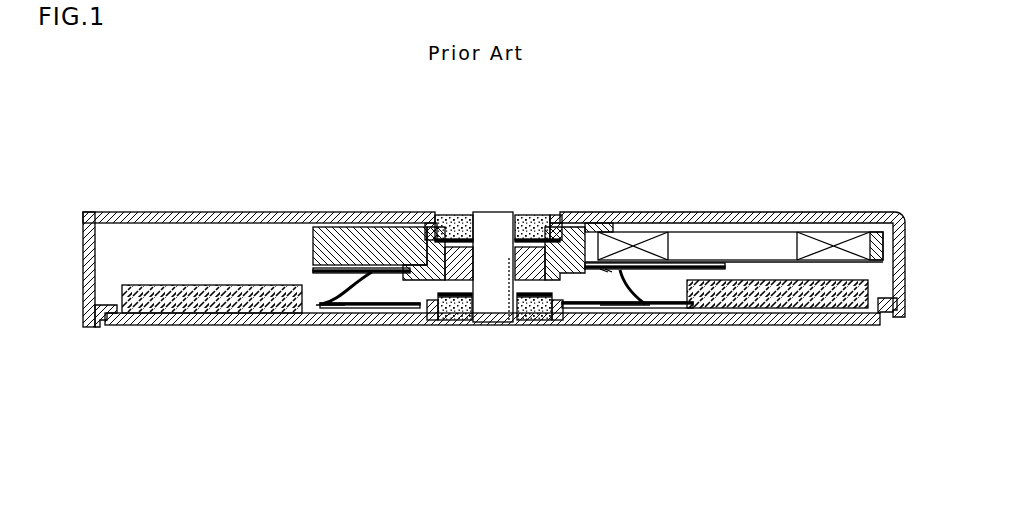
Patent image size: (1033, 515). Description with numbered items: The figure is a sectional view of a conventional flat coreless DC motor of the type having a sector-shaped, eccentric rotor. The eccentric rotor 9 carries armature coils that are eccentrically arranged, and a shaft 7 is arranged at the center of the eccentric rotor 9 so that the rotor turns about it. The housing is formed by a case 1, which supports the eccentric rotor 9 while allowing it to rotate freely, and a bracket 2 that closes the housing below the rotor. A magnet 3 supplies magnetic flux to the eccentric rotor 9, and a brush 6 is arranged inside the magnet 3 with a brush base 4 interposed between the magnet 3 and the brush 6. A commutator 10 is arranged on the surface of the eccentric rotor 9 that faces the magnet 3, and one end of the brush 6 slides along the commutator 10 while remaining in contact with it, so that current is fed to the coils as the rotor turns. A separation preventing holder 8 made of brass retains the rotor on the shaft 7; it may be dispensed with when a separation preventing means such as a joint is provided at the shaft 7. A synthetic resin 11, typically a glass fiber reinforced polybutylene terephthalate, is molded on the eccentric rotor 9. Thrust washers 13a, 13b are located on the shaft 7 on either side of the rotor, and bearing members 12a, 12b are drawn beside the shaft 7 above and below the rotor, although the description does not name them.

The case 1 is at (229, 213).
The bracket 2 is at (211, 325).
The magnet 3 is at (783, 300).
The brush base 4 is at (640, 322).
The brush 6 is at (380, 325).
The shaft 7 is at (496, 215).
The separation preventing holder 8 is at (445, 212).
The eccentric rotor 9 is at (636, 238).
The commutator 10 is at (655, 268).
The synthetic resin 11 is at (340, 230).
The upper bearing 12a is at (535, 215).
The lower bearing 12b is at (450, 322).
The thrust washer 13a is at (556, 218).
The thrust washer 13b is at (525, 322).